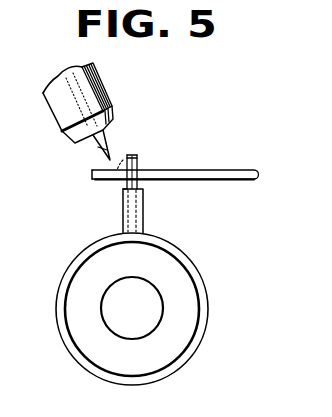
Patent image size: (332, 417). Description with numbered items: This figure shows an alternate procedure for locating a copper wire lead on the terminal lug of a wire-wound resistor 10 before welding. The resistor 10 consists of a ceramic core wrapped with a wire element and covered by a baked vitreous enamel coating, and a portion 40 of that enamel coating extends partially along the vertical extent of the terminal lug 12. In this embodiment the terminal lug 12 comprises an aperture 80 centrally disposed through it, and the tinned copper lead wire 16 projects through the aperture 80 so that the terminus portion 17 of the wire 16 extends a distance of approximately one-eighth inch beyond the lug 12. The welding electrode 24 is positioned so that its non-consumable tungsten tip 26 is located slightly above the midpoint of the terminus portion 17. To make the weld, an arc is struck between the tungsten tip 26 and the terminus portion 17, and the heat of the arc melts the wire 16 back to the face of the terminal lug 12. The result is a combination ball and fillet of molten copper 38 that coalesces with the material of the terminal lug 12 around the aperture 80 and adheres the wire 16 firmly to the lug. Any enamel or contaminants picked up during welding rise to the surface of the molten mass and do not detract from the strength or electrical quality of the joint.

The resistor 10 is at (188, 305).
The terminal lug 12 is at (137, 155).
The wire lead 16 is at (228, 170).
The terminus portion 17 is at (92, 173).
The electrode 24 is at (103, 80).
The tungsten tip 26 is at (114, 156).
The combination ball and fillet of molten copper 38 is at (122, 187).
The portion of the vitreous enamel coating 40 is at (143, 212).
The aperture 80 is at (137, 166).